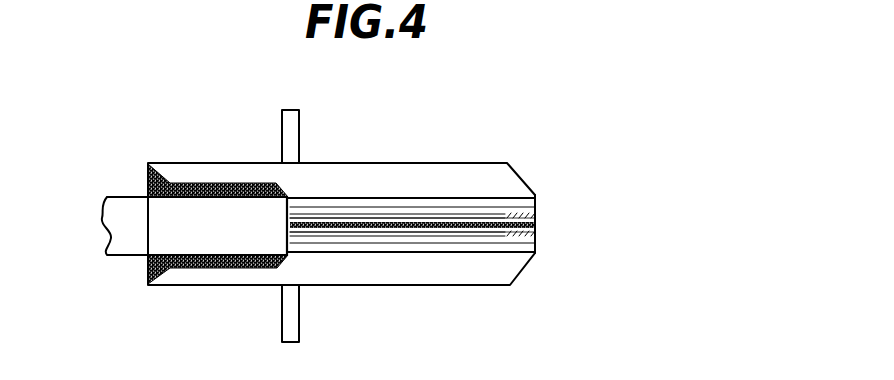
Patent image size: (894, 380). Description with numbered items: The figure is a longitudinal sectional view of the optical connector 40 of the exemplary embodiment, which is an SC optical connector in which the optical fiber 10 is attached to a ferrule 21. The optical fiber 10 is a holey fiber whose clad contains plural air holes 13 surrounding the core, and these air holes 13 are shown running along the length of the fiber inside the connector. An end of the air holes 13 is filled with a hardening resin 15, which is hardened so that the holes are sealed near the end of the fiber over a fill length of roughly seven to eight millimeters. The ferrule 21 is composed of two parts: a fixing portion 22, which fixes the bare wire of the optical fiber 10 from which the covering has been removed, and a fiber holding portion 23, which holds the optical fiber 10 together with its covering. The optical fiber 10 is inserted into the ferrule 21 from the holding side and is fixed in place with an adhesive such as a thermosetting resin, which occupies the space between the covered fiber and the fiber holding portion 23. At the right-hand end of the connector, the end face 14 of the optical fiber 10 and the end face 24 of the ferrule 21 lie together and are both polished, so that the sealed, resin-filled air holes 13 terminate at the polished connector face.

The optical fiber 10 is at (104, 194).
The air holes 13 is at (438, 233).
The end face 14 is at (535, 253).
The hardening resin 15 is at (520, 217).
The ferrule 21 is at (396, 162).
The fixing portion 22 is at (360, 255).
The fiber holding portion 23 is at (222, 268).
The end face 24 is at (535, 195).
The optical connector 40 is at (493, 210).